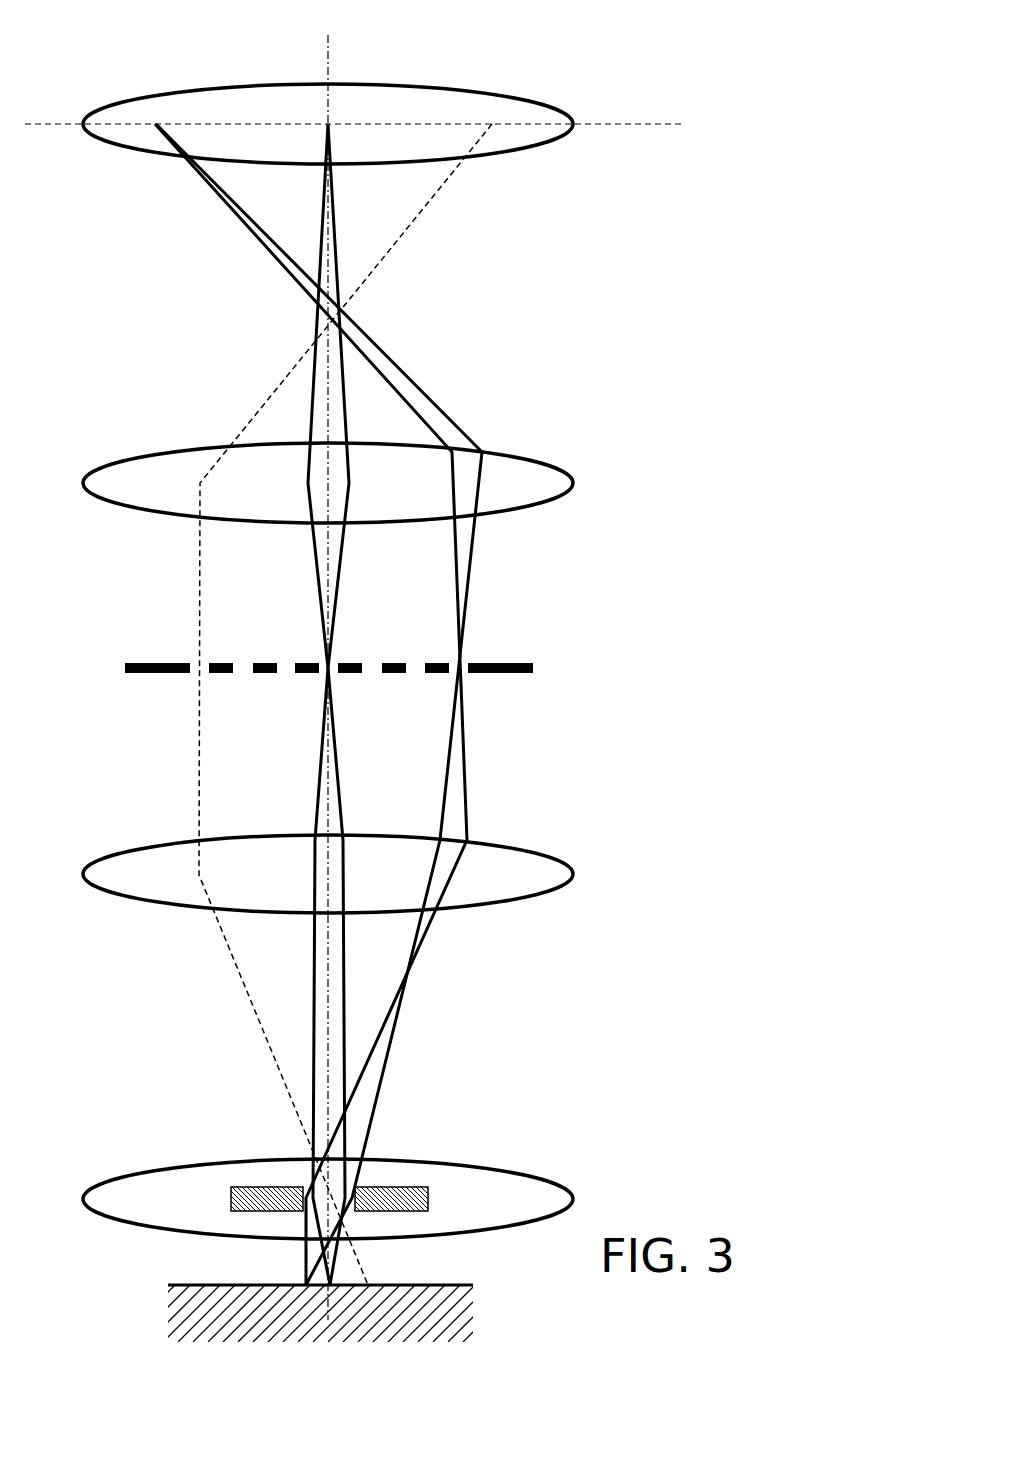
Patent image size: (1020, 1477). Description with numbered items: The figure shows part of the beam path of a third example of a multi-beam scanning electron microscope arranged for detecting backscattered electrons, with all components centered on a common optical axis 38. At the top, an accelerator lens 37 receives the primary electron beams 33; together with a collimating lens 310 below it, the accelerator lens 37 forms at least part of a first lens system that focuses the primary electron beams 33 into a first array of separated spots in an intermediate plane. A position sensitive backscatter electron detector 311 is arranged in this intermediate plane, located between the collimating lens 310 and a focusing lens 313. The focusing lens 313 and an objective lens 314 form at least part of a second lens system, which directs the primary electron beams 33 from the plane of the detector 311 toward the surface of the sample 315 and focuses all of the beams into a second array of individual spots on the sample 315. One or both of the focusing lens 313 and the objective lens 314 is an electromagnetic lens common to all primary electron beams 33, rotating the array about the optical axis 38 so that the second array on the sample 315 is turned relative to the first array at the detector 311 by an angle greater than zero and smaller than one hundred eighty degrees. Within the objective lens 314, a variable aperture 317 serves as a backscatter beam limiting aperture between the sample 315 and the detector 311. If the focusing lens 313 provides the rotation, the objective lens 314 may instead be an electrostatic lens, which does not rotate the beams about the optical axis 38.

The optical axis 38 is at (328, 67).
The accelerator lens 37 is at (560, 135).
The primary electron beams 33 is at (335, 395).
The collimating lens 310 is at (573, 483).
The position sensitive backscatter electron detector 311 is at (535, 668).
The focusing lens 313 is at (573, 874).
The objective lens 314 is at (573, 1199).
The variable aperture 317 is at (423, 1198).
The sample 315 is at (453, 1284).